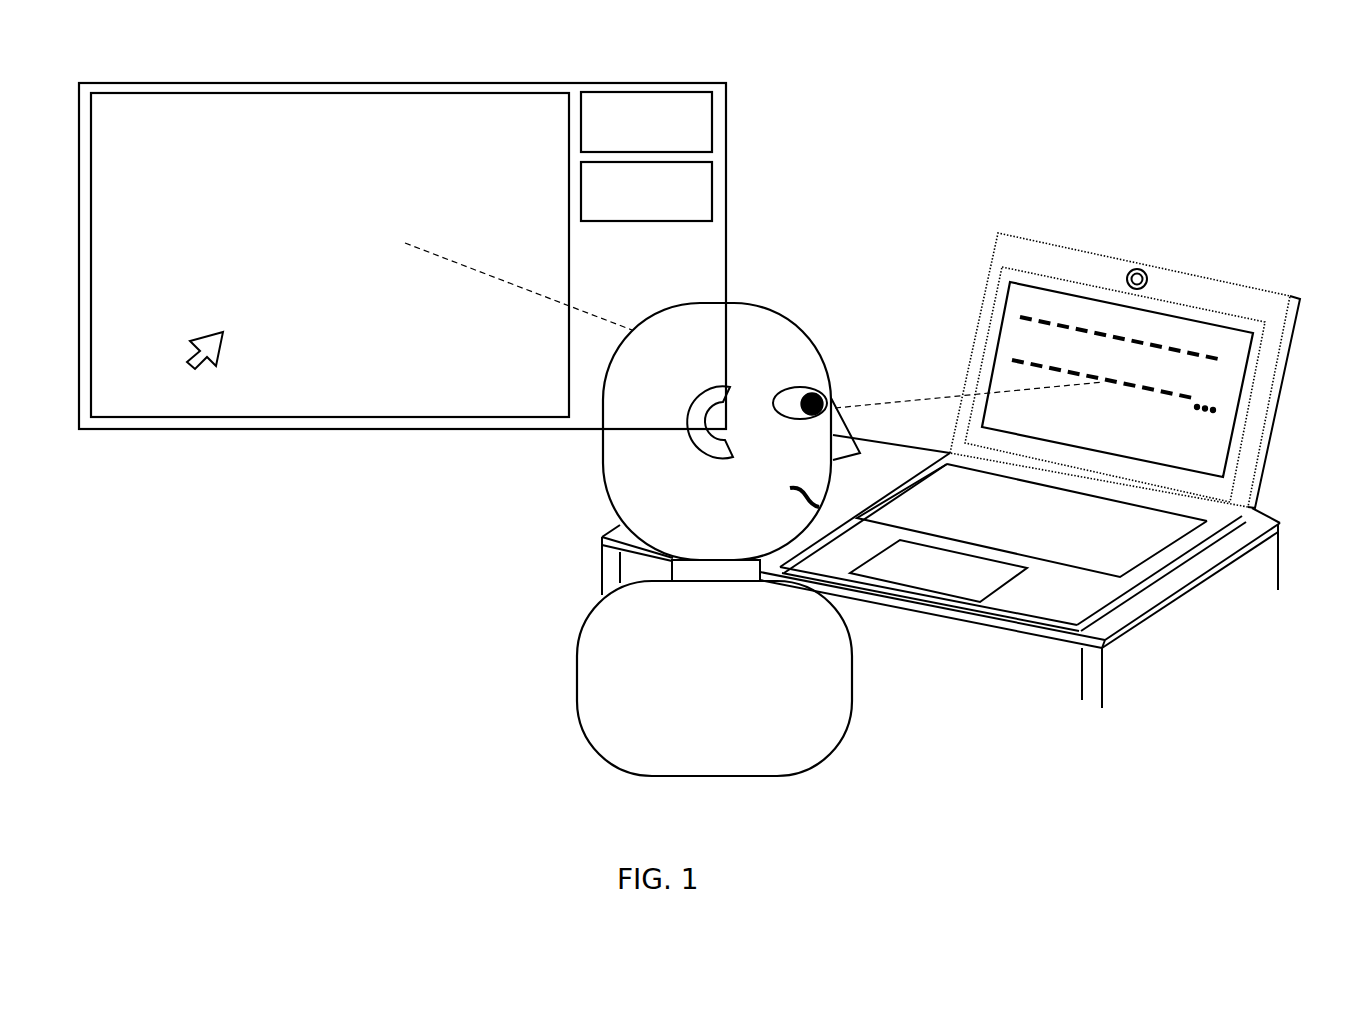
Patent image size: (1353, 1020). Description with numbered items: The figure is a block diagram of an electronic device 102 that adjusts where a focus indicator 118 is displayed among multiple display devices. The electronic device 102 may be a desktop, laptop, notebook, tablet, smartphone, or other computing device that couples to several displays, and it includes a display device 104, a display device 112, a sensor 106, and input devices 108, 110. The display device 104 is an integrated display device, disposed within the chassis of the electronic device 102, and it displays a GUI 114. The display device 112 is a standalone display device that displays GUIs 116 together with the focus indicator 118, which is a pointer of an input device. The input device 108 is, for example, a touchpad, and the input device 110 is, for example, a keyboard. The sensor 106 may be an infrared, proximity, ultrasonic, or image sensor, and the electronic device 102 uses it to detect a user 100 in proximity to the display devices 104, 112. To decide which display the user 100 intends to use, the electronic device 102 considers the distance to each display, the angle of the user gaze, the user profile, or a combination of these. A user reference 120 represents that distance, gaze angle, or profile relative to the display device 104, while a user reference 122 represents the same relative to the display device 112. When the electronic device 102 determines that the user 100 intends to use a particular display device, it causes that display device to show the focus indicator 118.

The user 100 is at (577, 678).
The electronic device 102 is at (1265, 248).
The display device 104 is at (997, 288).
The sensor 106 is at (1140, 268).
The input device 108 is at (1003, 587).
The input device 110 is at (1170, 543).
The display device 112 is at (727, 117).
The GUI 114 is at (1247, 370).
The GUIs 116 is at (580, 190).
The focus indicator 118 is at (226, 348).
The user reference 120 is at (891, 405).
The user reference 122 is at (595, 315).